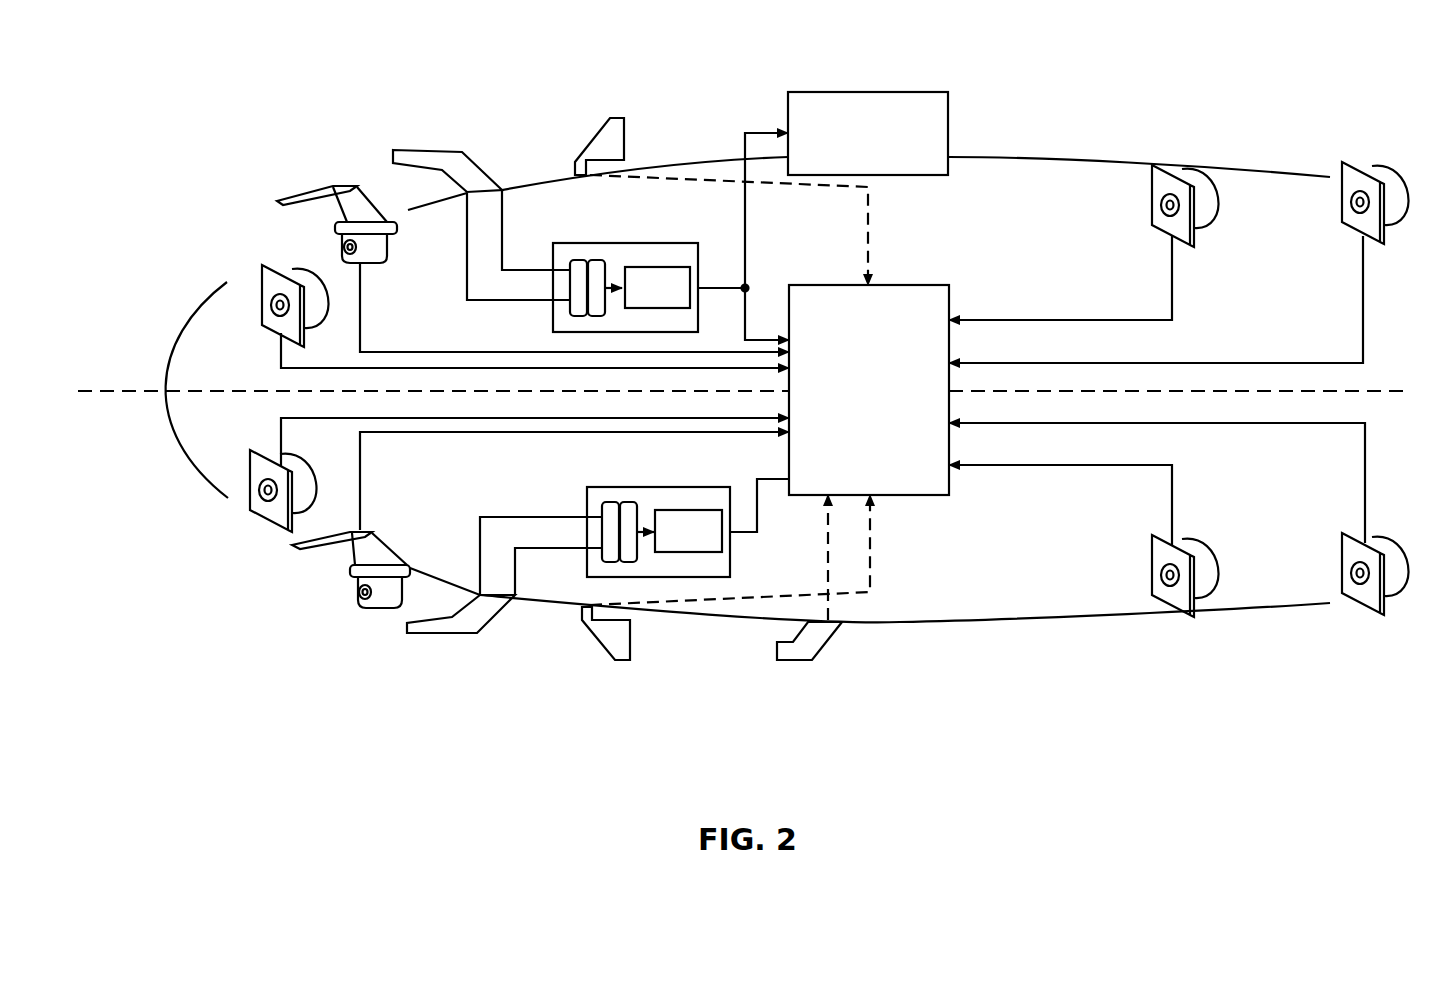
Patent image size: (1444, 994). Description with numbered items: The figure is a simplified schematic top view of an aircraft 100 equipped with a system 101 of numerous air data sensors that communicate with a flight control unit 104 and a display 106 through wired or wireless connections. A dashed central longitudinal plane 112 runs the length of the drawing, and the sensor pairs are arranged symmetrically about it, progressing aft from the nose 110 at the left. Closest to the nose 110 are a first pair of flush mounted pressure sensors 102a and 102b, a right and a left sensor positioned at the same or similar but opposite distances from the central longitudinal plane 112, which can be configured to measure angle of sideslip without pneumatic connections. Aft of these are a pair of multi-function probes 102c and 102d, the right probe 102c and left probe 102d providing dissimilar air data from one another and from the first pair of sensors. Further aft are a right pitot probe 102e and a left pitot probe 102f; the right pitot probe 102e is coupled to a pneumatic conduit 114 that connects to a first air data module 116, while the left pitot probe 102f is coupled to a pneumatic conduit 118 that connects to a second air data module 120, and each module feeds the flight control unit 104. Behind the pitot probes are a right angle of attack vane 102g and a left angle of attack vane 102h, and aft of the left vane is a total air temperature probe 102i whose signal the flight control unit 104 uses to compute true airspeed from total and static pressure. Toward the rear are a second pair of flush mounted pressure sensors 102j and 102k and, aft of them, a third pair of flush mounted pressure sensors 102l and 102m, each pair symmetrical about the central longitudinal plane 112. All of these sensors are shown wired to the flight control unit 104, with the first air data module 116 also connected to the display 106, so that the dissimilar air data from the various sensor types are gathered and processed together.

The aircraft 100 is at (1256, 151).
The system 101 is at (996, 101).
The flush mounted pressure sensor 102a is at (268, 265).
The flush mounted pressure sensor 102b is at (250, 507).
The multi-function probe 102c is at (337, 186).
The multi-function probe 102d is at (365, 608).
The pitot probe 102e is at (500, 133).
The pitot probe 102f is at (478, 634).
The angle of attack vane 102g is at (612, 118).
The angle of attack vane 102h is at (605, 656).
The total air temperature probe 102i is at (812, 660).
The flush mounted pressure sensor 102j is at (1197, 228).
The flush mounted pressure sensor 102k is at (1192, 538).
The flush mounted pressure sensor 102l is at (1366, 172).
The flush mounted pressure sensor 102m is at (1386, 598).
The flight control unit 104 is at (905, 285).
The display 106 is at (881, 92).
The nose 110 is at (147, 408).
The central longitudinal plane 112 is at (245, 390).
The pneumatic conduit 114 is at (465, 268).
The first air data module 116 is at (618, 243).
The pneumatic conduit 118 is at (508, 517).
The second air data module 120 is at (632, 487).